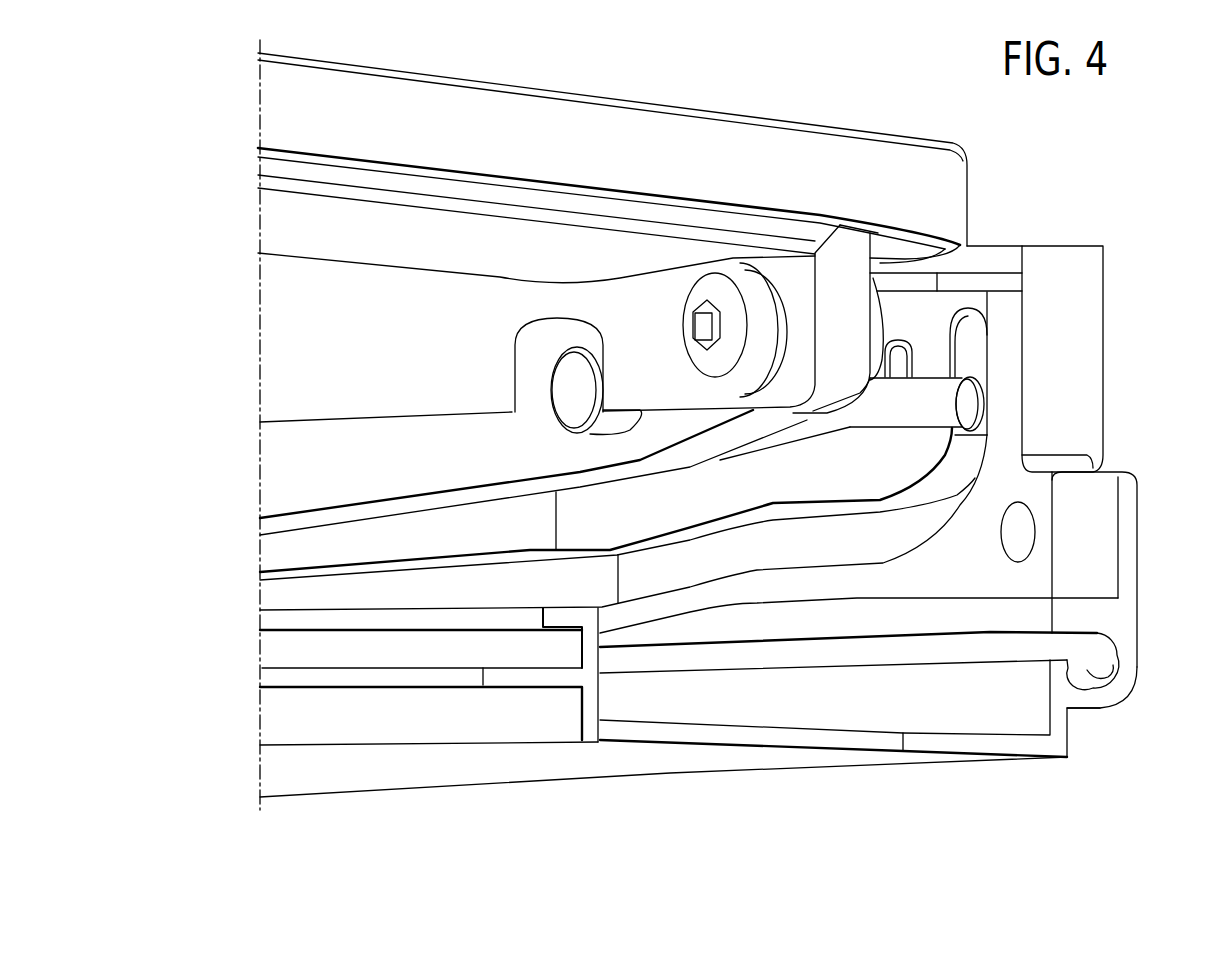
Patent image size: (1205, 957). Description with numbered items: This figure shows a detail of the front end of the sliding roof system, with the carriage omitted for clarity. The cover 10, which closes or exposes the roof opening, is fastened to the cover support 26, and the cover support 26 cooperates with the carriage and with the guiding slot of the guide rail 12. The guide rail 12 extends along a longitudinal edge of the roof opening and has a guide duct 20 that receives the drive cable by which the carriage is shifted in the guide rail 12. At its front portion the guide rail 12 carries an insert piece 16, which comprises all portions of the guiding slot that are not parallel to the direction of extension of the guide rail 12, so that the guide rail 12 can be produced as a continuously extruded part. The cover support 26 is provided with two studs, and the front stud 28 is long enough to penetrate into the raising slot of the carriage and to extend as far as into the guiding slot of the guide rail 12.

The cover 10 is at (798, 150).
The guide rail 12 is at (588, 724).
The insert piece 16 is at (1067, 338).
The guide duct 20 is at (1093, 670).
The cover support 26 is at (315, 468).
The front stud 28 is at (940, 395).